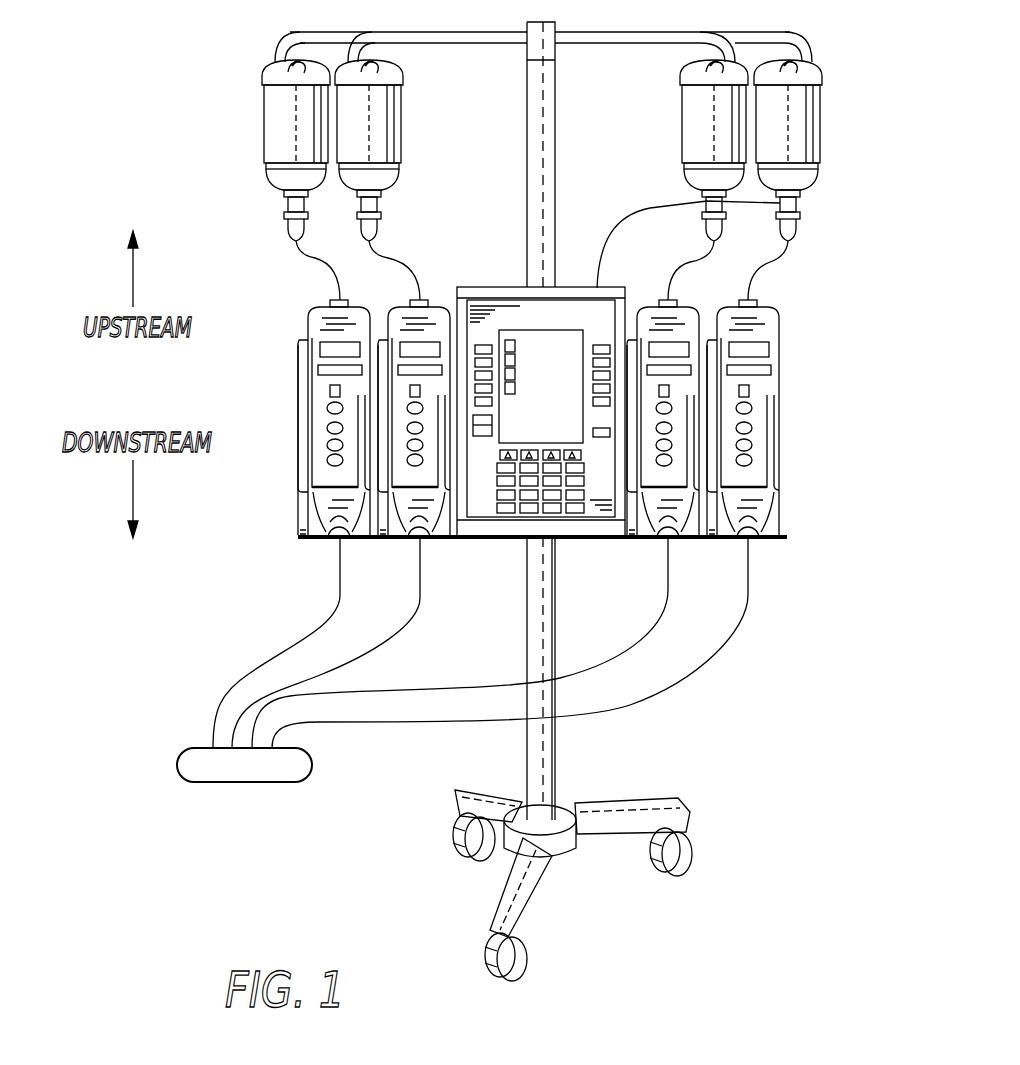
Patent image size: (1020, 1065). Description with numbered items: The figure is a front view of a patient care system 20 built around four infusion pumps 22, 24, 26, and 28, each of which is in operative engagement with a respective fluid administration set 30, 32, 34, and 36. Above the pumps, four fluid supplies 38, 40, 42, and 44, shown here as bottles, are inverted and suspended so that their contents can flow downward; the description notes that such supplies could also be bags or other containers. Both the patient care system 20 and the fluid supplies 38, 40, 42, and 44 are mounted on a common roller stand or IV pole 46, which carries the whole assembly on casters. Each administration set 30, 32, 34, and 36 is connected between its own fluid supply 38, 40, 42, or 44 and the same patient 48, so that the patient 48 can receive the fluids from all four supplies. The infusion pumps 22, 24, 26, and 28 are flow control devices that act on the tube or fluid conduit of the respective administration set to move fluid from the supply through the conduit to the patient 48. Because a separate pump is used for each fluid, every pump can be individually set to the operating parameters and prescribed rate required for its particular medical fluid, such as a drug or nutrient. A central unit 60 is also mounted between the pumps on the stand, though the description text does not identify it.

The patient care system 20 is at (158, 157).
The infusion pump 22 is at (785, 305).
The infusion pump 24 is at (645, 305).
The infusion pump 26 is at (397, 307).
The infusion pump 28 is at (317, 306).
The fluid administration set 30 is at (790, 248).
The fluid administration set 32 is at (713, 243).
The fluid administration set 34 is at (388, 258).
The fluid administration set 36 is at (297, 256).
The fluid supply 38 is at (823, 127).
The fluid supply 40 is at (680, 122).
The fluid supply 42 is at (403, 118).
The fluid supply 44 is at (263, 98).
The roller stand 46 is at (555, 760).
The patient 48 is at (177, 765).
The controller / monitor 60 is at (505, 288).